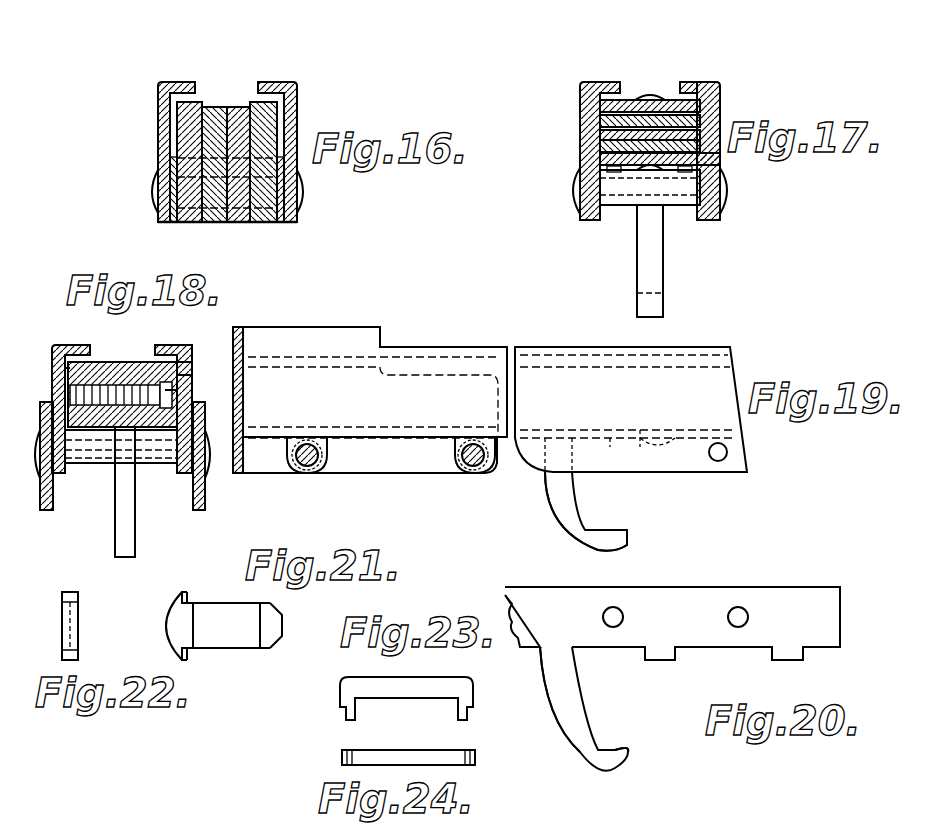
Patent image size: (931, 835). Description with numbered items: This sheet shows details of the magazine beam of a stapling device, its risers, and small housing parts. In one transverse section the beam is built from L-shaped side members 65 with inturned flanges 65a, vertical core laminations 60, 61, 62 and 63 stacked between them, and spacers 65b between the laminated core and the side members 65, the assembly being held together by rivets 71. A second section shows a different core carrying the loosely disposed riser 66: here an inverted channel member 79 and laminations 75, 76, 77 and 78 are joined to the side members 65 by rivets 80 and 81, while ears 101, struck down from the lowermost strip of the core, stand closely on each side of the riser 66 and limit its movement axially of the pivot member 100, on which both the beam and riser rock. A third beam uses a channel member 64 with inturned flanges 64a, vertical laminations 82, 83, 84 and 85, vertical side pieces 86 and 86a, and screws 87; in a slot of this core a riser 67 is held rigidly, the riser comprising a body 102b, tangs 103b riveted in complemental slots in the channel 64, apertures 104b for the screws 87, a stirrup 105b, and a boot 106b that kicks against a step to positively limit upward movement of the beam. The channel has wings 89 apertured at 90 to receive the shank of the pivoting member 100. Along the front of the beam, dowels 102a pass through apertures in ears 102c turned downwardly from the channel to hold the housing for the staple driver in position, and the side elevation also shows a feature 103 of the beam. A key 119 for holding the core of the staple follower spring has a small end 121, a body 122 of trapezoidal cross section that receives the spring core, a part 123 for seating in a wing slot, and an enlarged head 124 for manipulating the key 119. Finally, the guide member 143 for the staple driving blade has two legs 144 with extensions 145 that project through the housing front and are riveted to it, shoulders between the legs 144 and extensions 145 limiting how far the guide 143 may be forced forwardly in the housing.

In FIG. 16, the vertical core lamination 60 is at (187, 128).
In FIG. 16, the vertical core lamination 61 is at (210, 107).
In FIG. 16, the vertical core lamination 62 is at (238, 107).
In FIG. 16, the vertical core lamination 63 is at (270, 130).
In FIG. 18, the channel member 64 is at (56, 390).
In FIG. 19, the channel member 64 is at (363, 422).
In FIG. 18, the inturned flanges 64a is at (62, 345).
In FIG. 16, the side members 65 is at (158, 97).
In FIG. 17, the side members 65 is at (580, 165).
In FIG. 17, the flanges 65a is at (607, 82).
In FIG. 16, the spacers 65b is at (168, 223).
In FIG. 17, the riser 66 is at (643, 264).
In FIG. 18, the riser 67 is at (130, 526).
In FIG. 19, the riser 67 is at (550, 492).
In FIG. 20, the riser 67 is at (568, 700).
In FIG. 16, the rivets 71 is at (150, 190).
In FIG. 17, the lamination 75 is at (603, 148).
In FIG. 17, the lamination 76 is at (602, 134).
In FIG. 17, the lamination 77 is at (600, 118).
In FIG. 17, the lamination 78 is at (600, 103).
In FIG. 17, the inverted channel member 79 is at (700, 222).
In FIG. 17, the rivet 80 is at (647, 99).
In FIG. 17, the rivet 81 is at (722, 208).
In FIG. 18, the vertical lamination 82 is at (97, 362).
In FIG. 18, the vertical lamination 83 is at (112, 362).
In FIG. 18, the vertical lamination 84 is at (140, 433).
In FIG. 18, the vertical lamination 85 is at (192, 362).
In FIG. 18, the vertical side piece 86 is at (68, 370).
In FIG. 18, the vertical side piece 86a is at (203, 377).
In FIG. 18, the screws 87 is at (183, 392).
In FIG. 19, the wings 89 is at (687, 465).
In FIG. 19, the aperture 90 is at (730, 458).
In FIG. 18, the pivot member 100 is at (150, 463).
In FIG. 17, the ears 101 is at (693, 177).
In FIG. 19, the dowels 102a is at (312, 458).
In FIG. 18, the body 102b is at (128, 363).
In FIG. 20, the body 102b is at (706, 588).
In FIG. 19, the ears 102c is at (290, 462).
In FIG. 19, the notch 103 is at (650, 446).
In FIG. 20, the tangs 103b is at (698, 666).
In FIG. 18, the apertures 104b is at (118, 428).
In FIG. 20, the apertures 104b is at (728, 617).
In FIG. 19, the stirrup 105b is at (557, 518).
In FIG. 20, the stirrup 105b is at (573, 745).
In FIG. 19, the boot 106b is at (615, 530).
In FIG. 20, the boot 106b is at (608, 748).
In FIG. 22, the key 119 is at (72, 592).
In FIG. 21, the small end 121 is at (270, 646).
In FIG. 21, the body 122 is at (222, 642).
In FIG. 21, the part 123 is at (188, 600).
In FIG. 21, the head 124 is at (165, 619).
In FIG. 23, the guide member 143 is at (447, 687).
In FIG. 24, the guide member 143 is at (342, 758).
In FIG. 23, the legs 144 is at (358, 708).
In FIG. 23, the extensions 145 is at (346, 715).